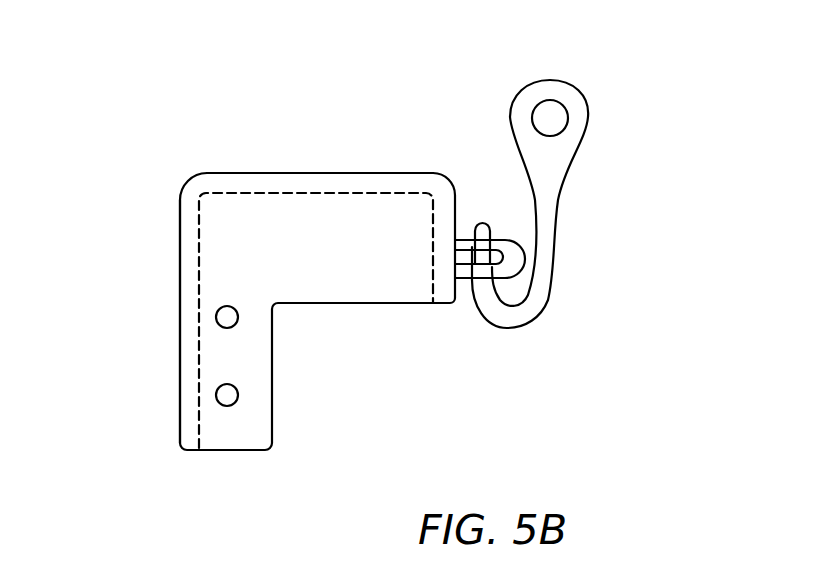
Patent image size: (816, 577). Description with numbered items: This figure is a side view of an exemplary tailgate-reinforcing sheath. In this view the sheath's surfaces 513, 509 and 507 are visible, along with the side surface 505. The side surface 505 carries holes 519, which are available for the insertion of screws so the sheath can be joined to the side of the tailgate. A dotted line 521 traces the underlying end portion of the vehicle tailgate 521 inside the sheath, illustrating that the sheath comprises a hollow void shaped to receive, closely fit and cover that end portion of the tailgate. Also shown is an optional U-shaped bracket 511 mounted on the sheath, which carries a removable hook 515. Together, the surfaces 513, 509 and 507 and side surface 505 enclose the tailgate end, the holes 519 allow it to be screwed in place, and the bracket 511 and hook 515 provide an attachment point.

The side surface 505 is at (303, 257).
The surface 507 is at (180, 237).
The surface 509 is at (455, 213).
The U-shaped bracket 511 is at (523, 260).
The surface 513 is at (270, 173).
The removable hook 515 is at (557, 198).
The holes 519 is at (216, 323).
The end portion of the vehicle tailgate 521 is at (360, 193).